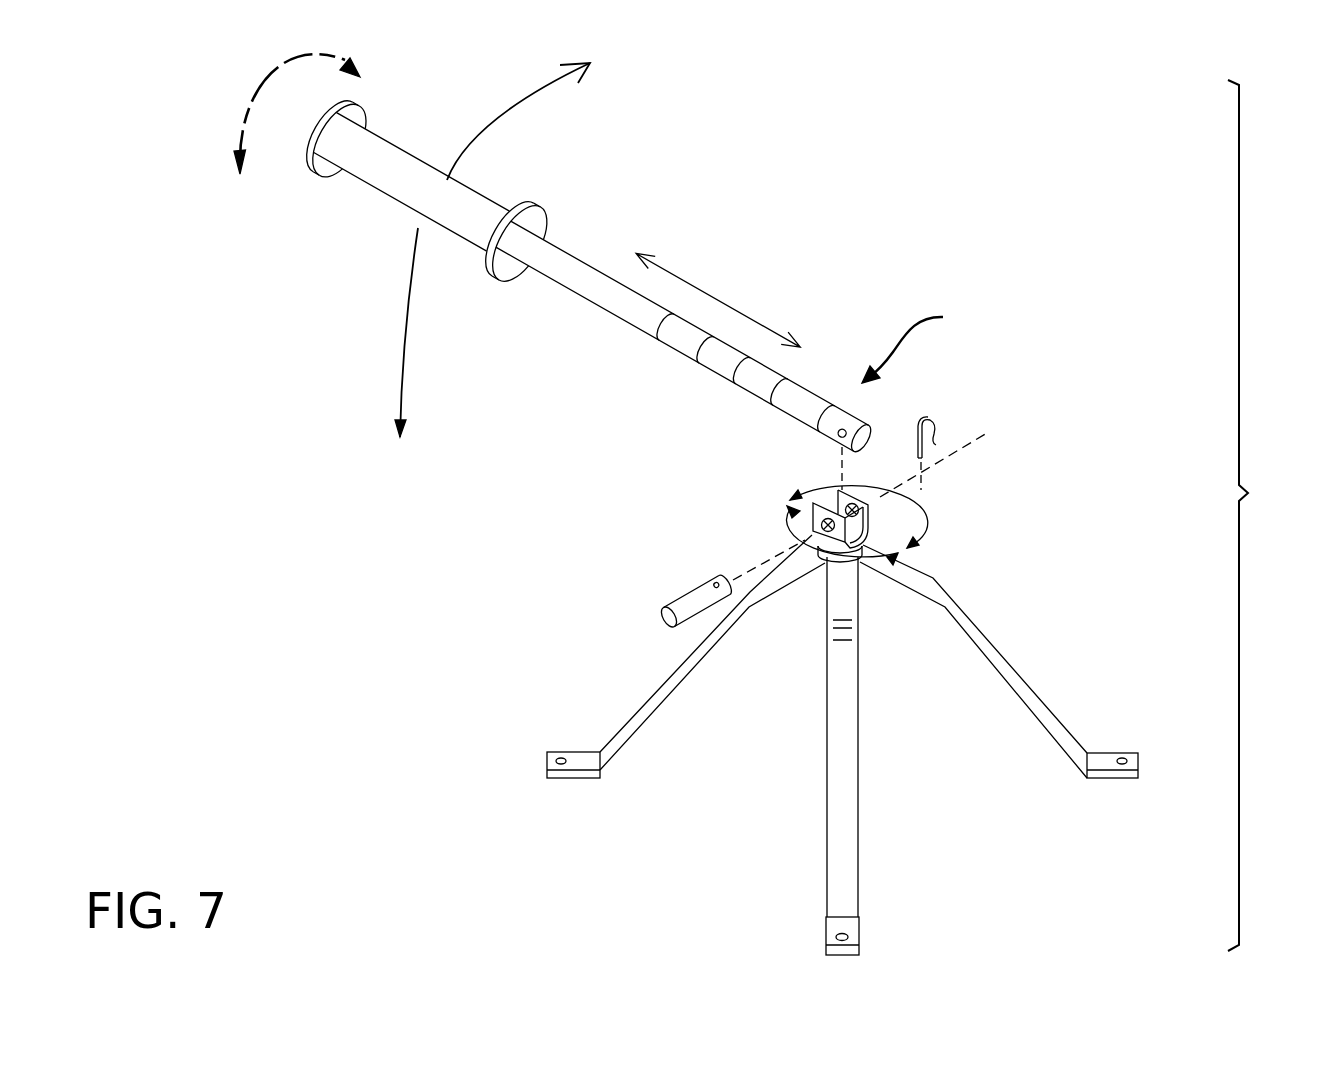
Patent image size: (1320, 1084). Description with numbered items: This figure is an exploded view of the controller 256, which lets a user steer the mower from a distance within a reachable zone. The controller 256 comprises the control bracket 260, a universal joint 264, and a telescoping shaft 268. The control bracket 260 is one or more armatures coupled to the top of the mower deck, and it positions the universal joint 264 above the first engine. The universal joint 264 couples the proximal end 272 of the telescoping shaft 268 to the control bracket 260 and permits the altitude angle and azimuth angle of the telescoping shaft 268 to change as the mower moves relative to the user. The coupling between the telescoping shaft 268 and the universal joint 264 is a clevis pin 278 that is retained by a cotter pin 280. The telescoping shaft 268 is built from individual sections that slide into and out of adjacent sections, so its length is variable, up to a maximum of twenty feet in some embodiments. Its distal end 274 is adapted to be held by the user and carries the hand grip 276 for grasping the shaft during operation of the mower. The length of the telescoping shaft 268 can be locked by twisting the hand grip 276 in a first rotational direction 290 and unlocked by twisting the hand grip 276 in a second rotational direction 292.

The controller 256 is at (1271, 515).
The control bracket 260 is at (1012, 667).
The universal joint 264 is at (873, 517).
The telescoping shaft 268 is at (600, 298).
The proximal end 272 is at (937, 337).
The distal end 274 is at (285, 193).
The hand grip 276 is at (417, 163).
The clevis pin 278 is at (693, 602).
The cotter pin 280 is at (933, 417).
The first rotational direction 290 is at (257, 129).
The second rotational direction 292 is at (385, 60).